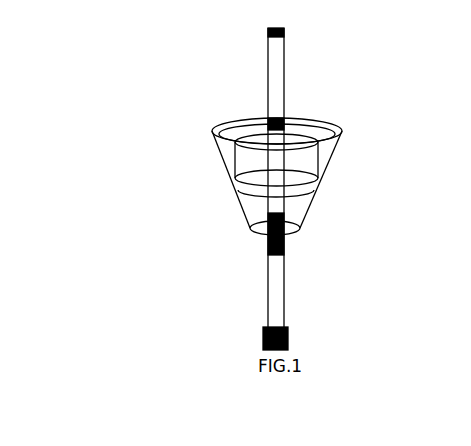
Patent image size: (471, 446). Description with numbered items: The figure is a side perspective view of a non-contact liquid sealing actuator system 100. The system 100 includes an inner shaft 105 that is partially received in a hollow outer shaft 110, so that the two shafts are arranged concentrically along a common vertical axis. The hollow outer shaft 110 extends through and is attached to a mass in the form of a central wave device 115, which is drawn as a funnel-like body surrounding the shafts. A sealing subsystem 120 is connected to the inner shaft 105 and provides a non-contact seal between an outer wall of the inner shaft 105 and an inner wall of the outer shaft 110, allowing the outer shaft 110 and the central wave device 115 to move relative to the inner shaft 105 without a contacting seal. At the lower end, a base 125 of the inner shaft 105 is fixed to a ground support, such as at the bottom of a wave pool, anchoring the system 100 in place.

The non-contact liquid sealing actuator system 100 is at (153, 130).
The inner shaft 105 is at (286, 292).
The hollow outer shaft 110 is at (285, 80).
The central wave device 115 is at (214, 147).
The sealing subsystem 120 is at (225, 240).
The base 125 is at (290, 340).